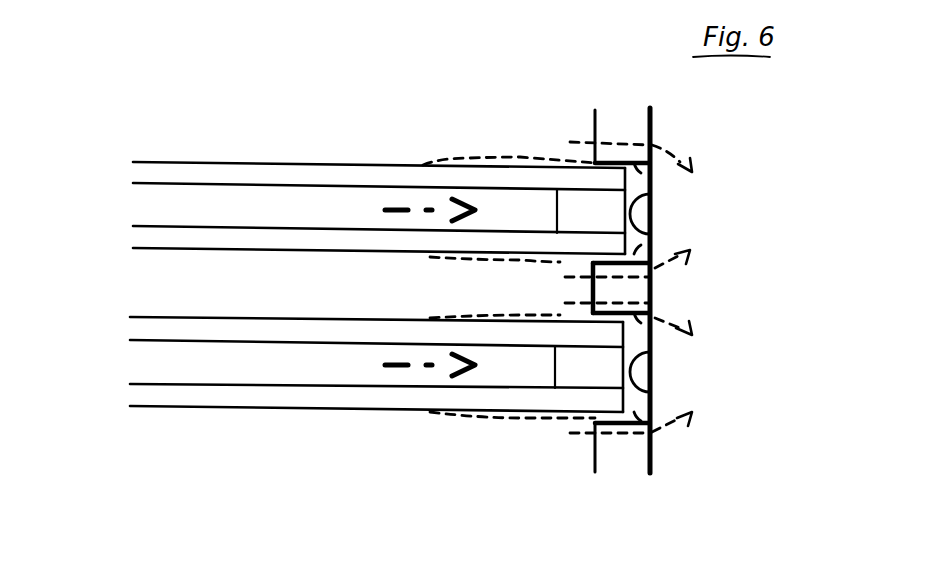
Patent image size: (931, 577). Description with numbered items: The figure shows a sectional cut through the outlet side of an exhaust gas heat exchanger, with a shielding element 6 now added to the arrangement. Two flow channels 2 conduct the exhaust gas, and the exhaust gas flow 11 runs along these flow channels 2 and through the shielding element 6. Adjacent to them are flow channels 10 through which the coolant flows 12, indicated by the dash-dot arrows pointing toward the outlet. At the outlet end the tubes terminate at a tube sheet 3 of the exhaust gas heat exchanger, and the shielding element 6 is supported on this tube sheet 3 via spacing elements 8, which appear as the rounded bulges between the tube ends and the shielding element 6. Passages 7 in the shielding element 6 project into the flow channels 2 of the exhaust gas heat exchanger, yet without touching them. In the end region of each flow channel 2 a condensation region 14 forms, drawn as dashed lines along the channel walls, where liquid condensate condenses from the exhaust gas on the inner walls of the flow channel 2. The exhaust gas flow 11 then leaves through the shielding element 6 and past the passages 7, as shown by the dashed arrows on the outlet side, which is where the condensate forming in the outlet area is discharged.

The flow channel 2 is at (332, 316).
The tube sheet 3 is at (577, 370).
The shielding element 6 is at (650, 123).
The passage 7 is at (650, 317).
The spacing element 8 is at (652, 233).
The flow channel 10 is at (222, 198).
The exhaust gas flow 11 is at (690, 167).
The coolant flow 12 is at (398, 208).
The condensation region 14 is at (516, 165).